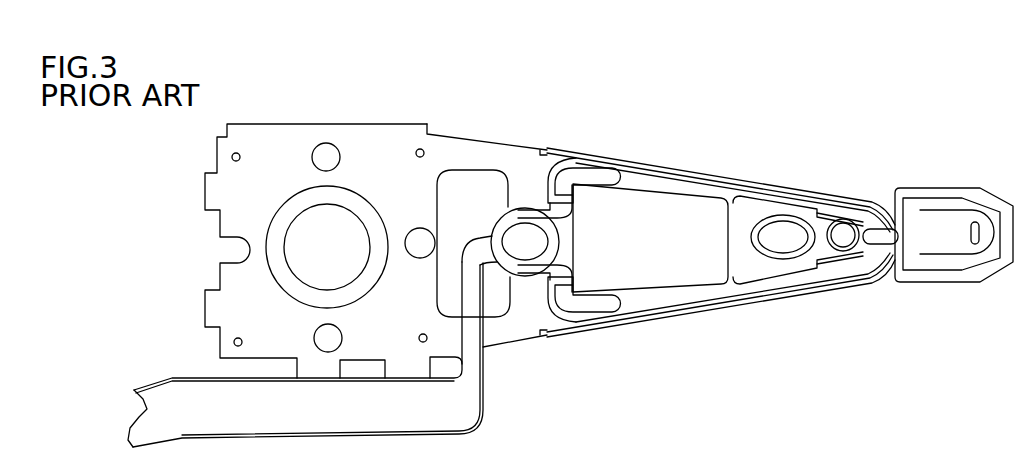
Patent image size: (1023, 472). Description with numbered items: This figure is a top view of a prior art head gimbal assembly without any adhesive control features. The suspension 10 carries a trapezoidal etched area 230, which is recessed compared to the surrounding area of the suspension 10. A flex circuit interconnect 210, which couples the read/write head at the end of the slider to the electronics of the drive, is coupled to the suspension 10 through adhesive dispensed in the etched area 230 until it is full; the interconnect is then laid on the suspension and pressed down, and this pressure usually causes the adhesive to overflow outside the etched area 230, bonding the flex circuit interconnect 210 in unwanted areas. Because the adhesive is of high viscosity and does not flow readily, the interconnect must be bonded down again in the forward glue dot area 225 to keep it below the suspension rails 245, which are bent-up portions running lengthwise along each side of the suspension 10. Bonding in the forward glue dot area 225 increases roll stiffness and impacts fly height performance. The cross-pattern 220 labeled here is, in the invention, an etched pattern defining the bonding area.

The suspension 10 is at (293, 129).
The flex circuit interconnect 210 is at (483, 240).
The cross-pattern 220 is at (563, 241).
The forward glue dot area 225 is at (878, 244).
The etched area 230 is at (672, 270).
The suspension rails 245 is at (598, 147).